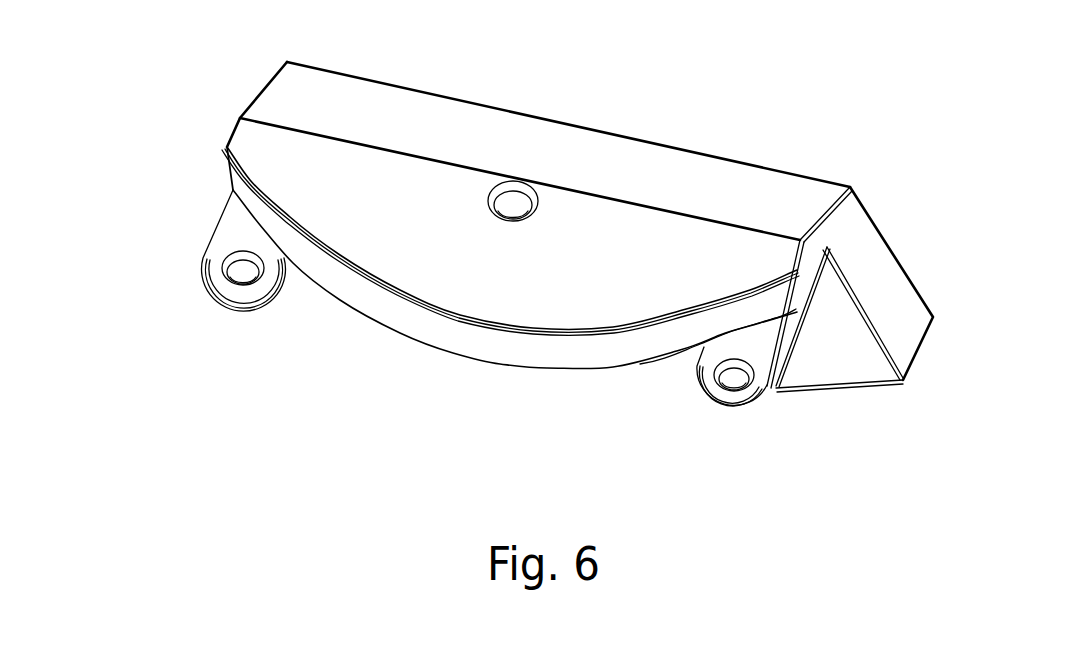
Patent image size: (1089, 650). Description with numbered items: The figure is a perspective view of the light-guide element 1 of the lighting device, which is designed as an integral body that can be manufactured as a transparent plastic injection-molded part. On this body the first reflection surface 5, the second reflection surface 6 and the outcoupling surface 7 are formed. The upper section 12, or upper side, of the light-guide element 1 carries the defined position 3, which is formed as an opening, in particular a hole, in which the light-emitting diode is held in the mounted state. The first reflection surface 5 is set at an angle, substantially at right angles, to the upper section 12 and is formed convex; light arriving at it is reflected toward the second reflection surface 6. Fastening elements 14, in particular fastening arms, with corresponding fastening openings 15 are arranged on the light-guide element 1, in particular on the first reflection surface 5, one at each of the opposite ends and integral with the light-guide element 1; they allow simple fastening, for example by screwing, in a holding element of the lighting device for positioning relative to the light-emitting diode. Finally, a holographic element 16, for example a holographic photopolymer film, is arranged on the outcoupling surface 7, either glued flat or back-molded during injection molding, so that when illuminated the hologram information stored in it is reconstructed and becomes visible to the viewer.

The light-guide element 1 is at (760, 163).
The defined position 3 is at (511, 182).
The first reflection surface 5 is at (455, 342).
The second reflection surface 6 is at (541, 157).
The outcoupling surface 7 is at (948, 283).
The upper section 12 is at (602, 245).
The fastening elements 14 is at (207, 253).
The fastening openings 15 is at (243, 273).
The holographic element 16 is at (890, 240).